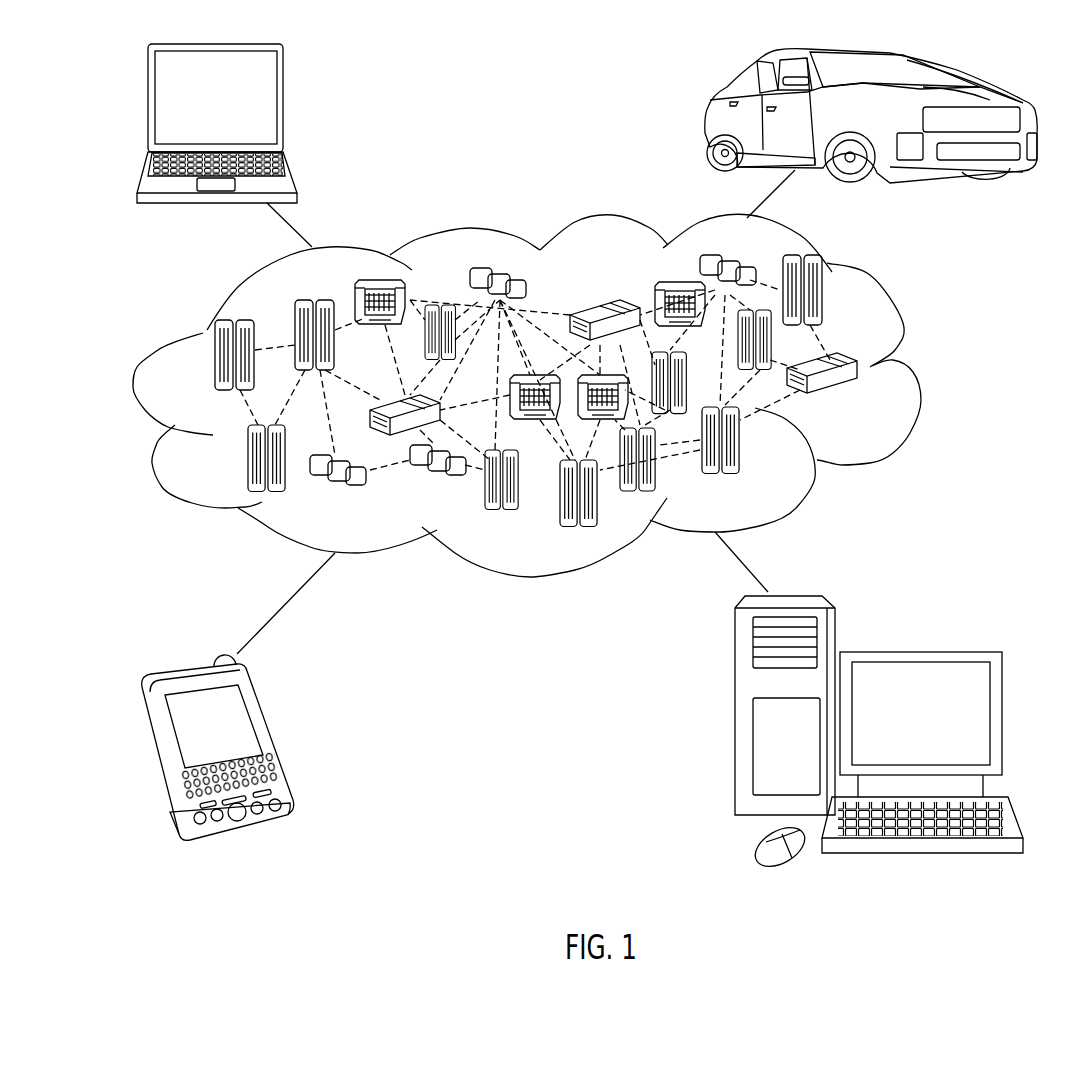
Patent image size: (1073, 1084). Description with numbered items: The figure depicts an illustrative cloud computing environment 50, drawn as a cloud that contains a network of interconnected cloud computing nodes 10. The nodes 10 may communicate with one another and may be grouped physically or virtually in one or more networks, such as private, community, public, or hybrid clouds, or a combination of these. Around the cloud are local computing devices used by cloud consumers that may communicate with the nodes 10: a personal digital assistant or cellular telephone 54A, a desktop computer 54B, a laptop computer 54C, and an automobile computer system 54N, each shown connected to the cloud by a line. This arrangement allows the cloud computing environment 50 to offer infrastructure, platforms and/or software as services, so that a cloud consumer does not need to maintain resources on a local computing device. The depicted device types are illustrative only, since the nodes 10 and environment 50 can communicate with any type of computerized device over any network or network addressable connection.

The cloud computing nodes 10 is at (585, 459).
The cloud computing environment 50 is at (918, 371).
The personal digital assistant (PDA) or cellular telephone 54A is at (275, 740).
The desktop computer 54B is at (918, 651).
The laptop computer 54C is at (283, 104).
The automobile computer system 54N is at (707, 122).